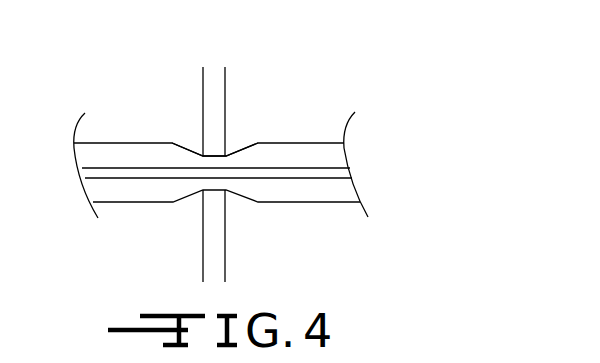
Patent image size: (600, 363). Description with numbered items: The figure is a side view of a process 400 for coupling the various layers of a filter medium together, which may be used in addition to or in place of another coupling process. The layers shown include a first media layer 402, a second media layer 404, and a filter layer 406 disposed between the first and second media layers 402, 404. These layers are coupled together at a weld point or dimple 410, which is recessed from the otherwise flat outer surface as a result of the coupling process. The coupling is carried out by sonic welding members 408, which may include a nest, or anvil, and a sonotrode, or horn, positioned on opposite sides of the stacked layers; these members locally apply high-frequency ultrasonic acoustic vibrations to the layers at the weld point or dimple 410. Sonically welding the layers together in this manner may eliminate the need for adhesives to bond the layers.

The process 400 is at (422, 68).
The first media layer 402 is at (269, 192).
The second media layer 404 is at (290, 153).
The filter layer 406 is at (332, 175).
The sonic welding members 408 is at (215, 93).
The weld point or dimple 410 is at (175, 121).